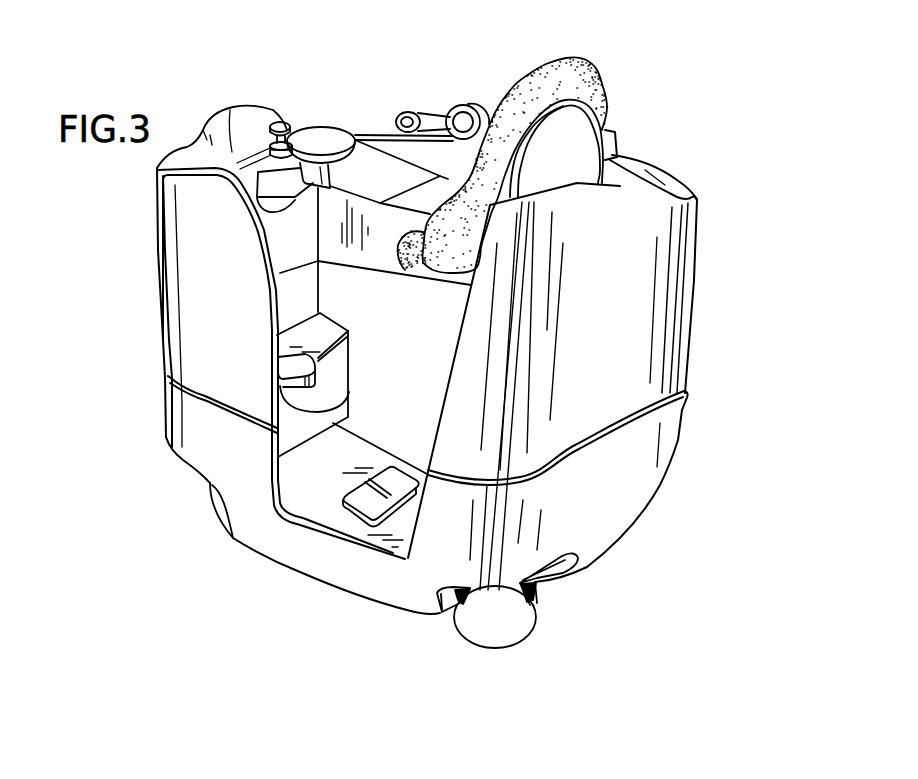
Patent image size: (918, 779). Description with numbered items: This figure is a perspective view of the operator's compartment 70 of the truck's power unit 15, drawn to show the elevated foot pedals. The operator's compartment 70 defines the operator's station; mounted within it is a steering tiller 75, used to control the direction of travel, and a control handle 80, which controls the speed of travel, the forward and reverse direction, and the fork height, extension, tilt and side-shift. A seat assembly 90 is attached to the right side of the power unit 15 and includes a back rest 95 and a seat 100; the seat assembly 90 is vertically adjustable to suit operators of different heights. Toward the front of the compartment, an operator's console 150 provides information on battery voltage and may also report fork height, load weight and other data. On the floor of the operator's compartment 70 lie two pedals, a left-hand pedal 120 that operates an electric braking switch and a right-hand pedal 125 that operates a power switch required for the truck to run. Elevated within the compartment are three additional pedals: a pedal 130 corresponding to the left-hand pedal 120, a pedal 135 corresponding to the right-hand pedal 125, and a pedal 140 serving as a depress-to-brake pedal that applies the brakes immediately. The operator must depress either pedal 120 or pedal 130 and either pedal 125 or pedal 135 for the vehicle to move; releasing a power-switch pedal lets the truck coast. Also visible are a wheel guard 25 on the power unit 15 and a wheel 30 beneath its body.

The power unit 15 is at (699, 338).
The front wheel guard 25 is at (213, 513).
The rear wheel 30 is at (522, 616).
The operator's compartment 70 is at (418, 437).
The steering tiller 75 is at (322, 137).
The control handle 80 is at (432, 116).
The seat assembly 90 is at (541, 144).
The back rest 95 is at (593, 84).
The seat 100 is at (416, 264).
The left-hand pedal 120 is at (362, 508).
The right-hand pedal 125 is at (397, 483).
The pedal 130 is at (335, 406).
The pedal 135 is at (303, 343).
The pedal 140 is at (305, 373).
The operator's console 150 is at (232, 120).